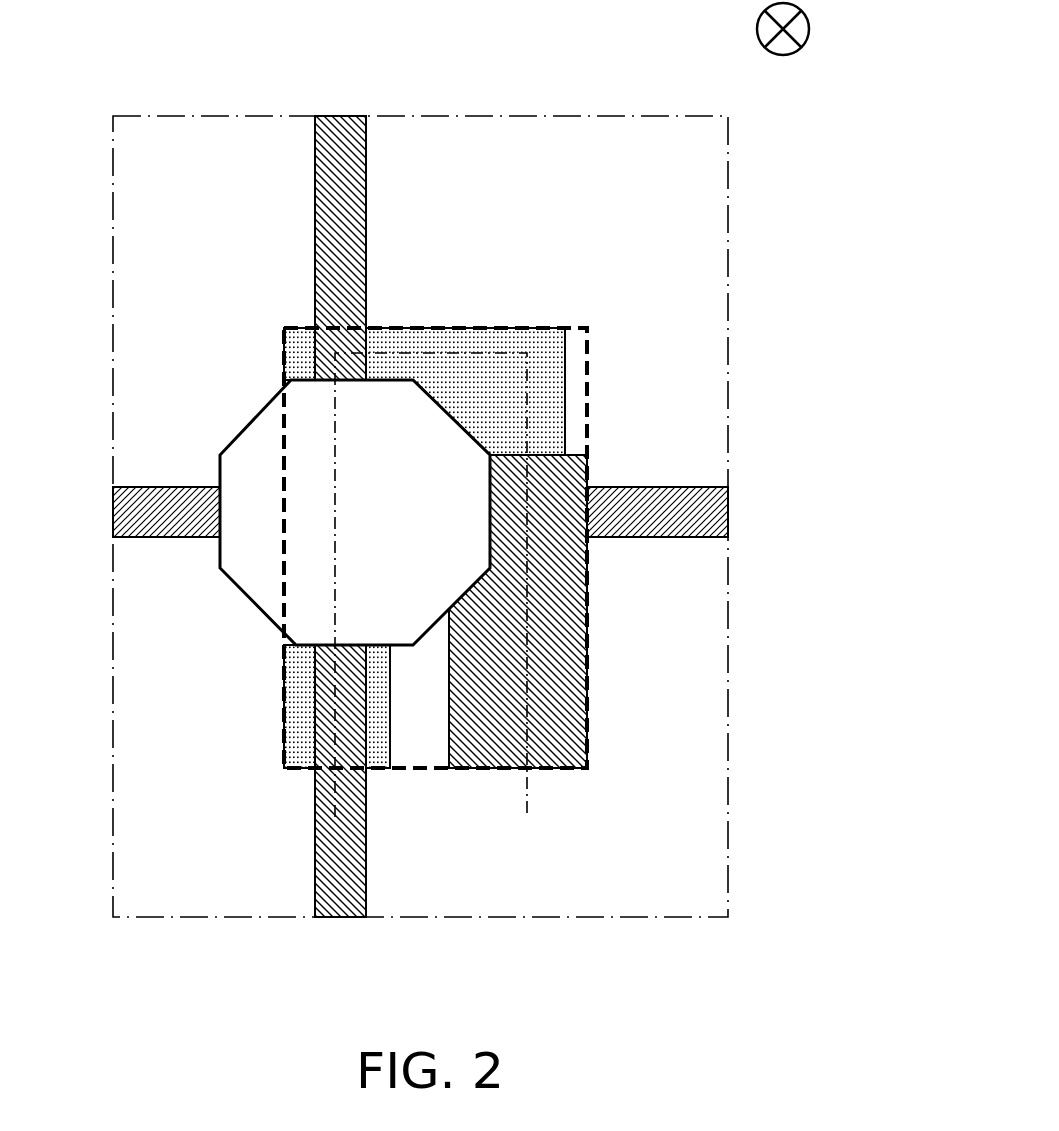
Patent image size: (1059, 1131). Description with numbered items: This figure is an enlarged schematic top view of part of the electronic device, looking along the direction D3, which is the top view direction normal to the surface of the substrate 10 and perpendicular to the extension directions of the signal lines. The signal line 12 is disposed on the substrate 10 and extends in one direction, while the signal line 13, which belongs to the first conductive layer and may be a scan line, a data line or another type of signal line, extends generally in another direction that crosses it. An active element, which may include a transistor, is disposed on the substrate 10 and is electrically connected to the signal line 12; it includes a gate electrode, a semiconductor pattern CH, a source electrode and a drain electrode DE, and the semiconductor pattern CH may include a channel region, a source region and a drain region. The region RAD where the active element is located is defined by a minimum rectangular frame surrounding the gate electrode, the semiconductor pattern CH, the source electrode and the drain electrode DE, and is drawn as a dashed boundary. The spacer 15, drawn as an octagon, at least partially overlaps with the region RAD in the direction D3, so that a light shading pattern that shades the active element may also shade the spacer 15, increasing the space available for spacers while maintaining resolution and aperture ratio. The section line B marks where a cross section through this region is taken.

The substrate 10 is at (713, 676).
The signal line 12 is at (343, 132).
The signal line 13 is at (712, 512).
The spacer 15 is at (253, 582).
The semiconductor pattern CH is at (545, 345).
The region where the active element is located RAD is at (588, 378).
The drain electrode DE is at (570, 689).
The direction D3 is at (803, 29).
The section line B-B' B is at (433, 603).